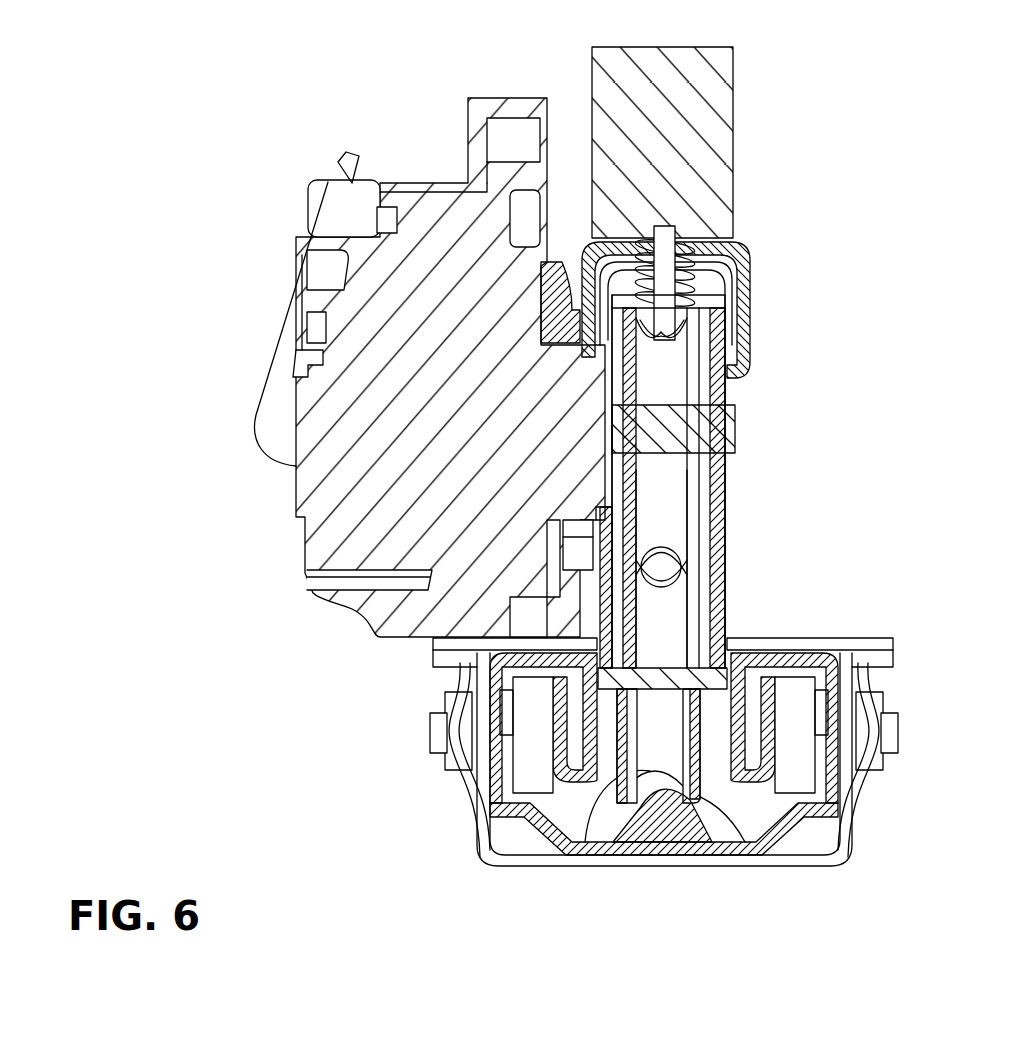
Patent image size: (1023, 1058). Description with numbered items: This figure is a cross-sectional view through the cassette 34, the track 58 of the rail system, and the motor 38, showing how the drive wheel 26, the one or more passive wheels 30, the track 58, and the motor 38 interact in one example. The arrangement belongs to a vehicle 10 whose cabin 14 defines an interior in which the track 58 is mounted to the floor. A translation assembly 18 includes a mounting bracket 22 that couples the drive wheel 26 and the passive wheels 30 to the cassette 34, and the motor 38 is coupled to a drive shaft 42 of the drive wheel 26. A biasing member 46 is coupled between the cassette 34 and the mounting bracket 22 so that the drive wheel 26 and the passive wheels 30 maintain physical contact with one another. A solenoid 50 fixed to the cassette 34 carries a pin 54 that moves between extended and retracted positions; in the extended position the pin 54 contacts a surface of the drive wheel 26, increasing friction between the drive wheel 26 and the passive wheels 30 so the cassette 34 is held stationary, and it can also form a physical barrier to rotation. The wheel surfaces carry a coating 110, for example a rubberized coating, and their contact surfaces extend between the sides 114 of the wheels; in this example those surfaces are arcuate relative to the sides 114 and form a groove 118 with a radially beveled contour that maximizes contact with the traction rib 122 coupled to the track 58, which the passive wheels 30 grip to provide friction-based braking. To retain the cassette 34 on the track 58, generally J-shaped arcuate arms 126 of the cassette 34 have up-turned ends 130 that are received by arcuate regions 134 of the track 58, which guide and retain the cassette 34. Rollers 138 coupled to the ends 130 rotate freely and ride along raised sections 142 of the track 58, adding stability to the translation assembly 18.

The vehicle 10 is at (168, 186).
The cabin 14 is at (866, 318).
The translation assembly 18 is at (405, 170).
The mounting bracket 22 is at (708, 465).
The drive wheel 26 is at (672, 504).
The passive wheels 30 is at (700, 618).
The cassette 34 is at (752, 377).
The motor 38 is at (397, 442).
The drive shaft 42 is at (720, 431).
The biasing member 46 is at (695, 250).
The solenoid 50 is at (733, 212).
The pin 54 is at (667, 220).
The track 58 is at (830, 838).
The coating 110 is at (666, 548).
The sides 114 is at (692, 491).
The groove 118 is at (758, 320).
The traction rib 122 is at (660, 845).
The arcuate arms 126 is at (732, 583).
The ends 130 is at (795, 787).
The arcuate regions 134 is at (730, 690).
The rollers 138 is at (792, 720).
The raised sections 142 is at (808, 828).